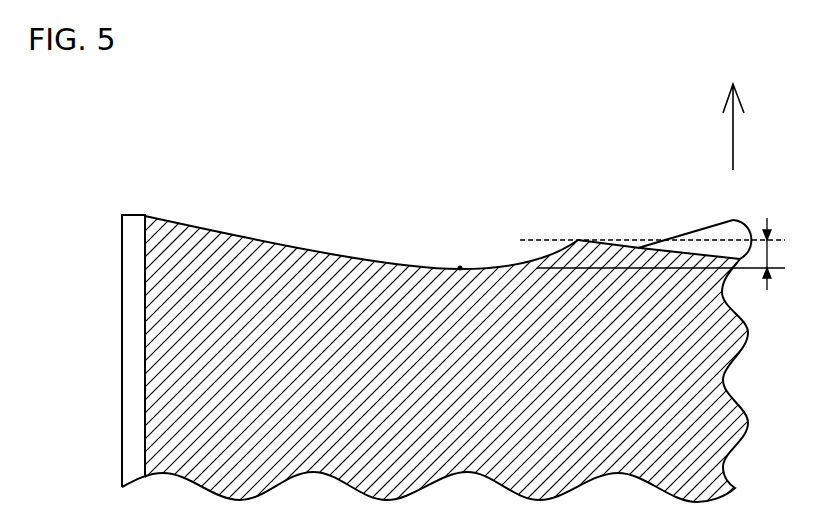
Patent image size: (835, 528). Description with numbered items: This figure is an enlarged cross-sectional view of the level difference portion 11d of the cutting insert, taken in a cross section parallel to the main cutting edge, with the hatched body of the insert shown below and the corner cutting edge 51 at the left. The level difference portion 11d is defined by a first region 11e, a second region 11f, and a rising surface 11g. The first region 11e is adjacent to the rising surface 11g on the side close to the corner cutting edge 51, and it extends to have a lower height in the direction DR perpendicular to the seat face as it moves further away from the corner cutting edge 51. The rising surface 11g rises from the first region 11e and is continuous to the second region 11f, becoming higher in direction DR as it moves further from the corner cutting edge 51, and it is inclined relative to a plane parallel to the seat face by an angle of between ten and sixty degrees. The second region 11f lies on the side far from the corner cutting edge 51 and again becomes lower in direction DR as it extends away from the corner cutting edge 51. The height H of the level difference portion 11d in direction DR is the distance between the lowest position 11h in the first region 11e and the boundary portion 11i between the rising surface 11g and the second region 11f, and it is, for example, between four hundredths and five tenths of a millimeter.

The corner cutting edge 51 is at (146, 215).
The level difference portion 11d is at (318, 119).
The first region 11e is at (325, 255).
The second region 11f is at (600, 242).
The rising surface 11g is at (537, 258).
The lowest position 11h is at (460, 266).
The boundary portion 11i is at (578, 241).
The height H is at (669, 254).
The direction DR is at (758, 127).